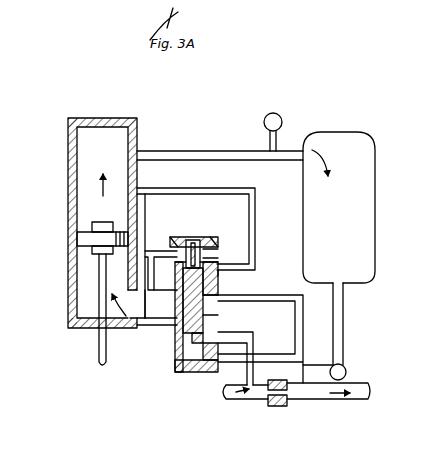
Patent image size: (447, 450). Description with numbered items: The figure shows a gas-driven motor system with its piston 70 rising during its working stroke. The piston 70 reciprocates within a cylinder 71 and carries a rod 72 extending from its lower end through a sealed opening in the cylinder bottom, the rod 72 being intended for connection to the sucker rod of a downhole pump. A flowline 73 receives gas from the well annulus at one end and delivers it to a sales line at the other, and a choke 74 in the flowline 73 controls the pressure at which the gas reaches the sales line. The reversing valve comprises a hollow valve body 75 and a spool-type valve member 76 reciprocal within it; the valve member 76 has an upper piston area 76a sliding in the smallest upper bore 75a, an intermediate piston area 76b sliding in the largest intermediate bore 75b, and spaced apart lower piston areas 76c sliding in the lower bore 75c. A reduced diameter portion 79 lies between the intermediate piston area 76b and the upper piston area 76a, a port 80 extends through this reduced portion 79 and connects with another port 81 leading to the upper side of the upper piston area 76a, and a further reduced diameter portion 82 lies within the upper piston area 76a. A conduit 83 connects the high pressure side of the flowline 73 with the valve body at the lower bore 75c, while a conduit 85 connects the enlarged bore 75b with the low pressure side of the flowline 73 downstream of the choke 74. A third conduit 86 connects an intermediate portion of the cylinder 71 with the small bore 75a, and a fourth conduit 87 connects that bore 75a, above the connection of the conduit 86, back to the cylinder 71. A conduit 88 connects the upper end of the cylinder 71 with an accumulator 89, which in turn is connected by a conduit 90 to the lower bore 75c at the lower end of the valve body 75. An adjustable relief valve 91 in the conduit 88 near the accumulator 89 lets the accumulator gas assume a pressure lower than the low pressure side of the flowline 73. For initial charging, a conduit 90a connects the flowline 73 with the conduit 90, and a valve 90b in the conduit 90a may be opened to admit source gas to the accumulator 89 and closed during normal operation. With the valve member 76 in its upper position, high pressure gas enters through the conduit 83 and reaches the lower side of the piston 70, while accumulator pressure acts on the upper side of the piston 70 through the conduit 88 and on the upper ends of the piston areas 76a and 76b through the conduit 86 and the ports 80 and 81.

The piston 70 is at (85, 242).
The cylinder 71 is at (68, 128).
The rod 72 is at (98, 268).
The flowline 73 is at (225, 399).
The choke 74 is at (277, 407).
The valve body 75 is at (182, 375).
The upper bore 75a is at (205, 252).
The intermediate bore 75b is at (218, 288).
The lower bore 75c is at (170, 327).
The valve member 76 is at (261, 339).
The upper piston area 76a is at (205, 237).
The intermediate piston area 76b is at (172, 280).
The lower piston areas 76c is at (218, 313).
The reduced diameter portion 79 is at (175, 268).
The port 80 is at (218, 277).
The port 81 is at (191, 241).
The reduced diameter portion 82 is at (201, 256).
The conduit 83 is at (254, 338).
The conduit 85 is at (346, 352).
The third conduit 86 is at (255, 200).
The fourth conduit 87 is at (153, 251).
The conduit 88 is at (158, 150).
The accumulator 89 is at (376, 185).
The conduit 90 is at (344, 340).
The conduit 90a is at (370, 386).
The valve 90b is at (330, 383).
The adjustable relief valve 91 is at (272, 112).